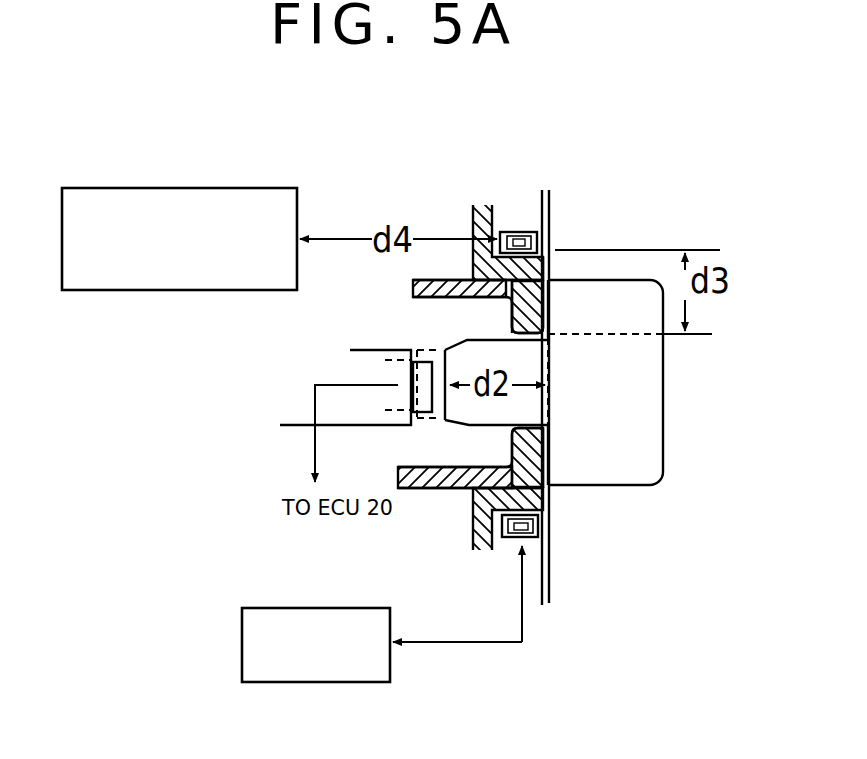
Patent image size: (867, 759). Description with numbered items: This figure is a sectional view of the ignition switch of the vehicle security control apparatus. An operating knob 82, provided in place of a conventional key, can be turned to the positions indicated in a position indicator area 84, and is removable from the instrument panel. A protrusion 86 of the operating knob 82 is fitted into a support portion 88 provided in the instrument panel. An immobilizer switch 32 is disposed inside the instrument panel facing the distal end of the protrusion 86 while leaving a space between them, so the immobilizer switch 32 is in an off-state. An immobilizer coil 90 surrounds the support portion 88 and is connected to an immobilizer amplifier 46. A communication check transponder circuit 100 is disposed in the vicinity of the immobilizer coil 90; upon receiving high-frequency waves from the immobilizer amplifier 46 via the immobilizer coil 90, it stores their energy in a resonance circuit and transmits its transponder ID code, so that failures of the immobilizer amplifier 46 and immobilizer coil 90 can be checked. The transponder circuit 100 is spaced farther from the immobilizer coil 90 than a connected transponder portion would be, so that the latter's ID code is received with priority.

The communication check transponder circuit 100 is at (268, 187).
The immobilizer coil 90 is at (517, 232).
The position indicator area 84 is at (549, 237).
The protrusion 86 is at (467, 352).
The support portion 88 is at (513, 312).
The immobilizer switch 32 is at (423, 372).
The operating knob 82 is at (643, 448).
The immobilizer amplifier 46 is at (335, 608).